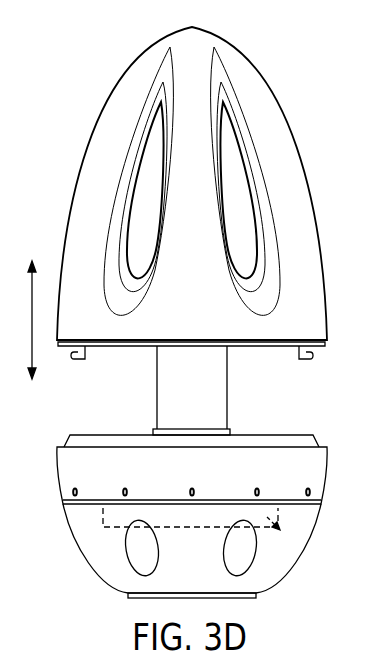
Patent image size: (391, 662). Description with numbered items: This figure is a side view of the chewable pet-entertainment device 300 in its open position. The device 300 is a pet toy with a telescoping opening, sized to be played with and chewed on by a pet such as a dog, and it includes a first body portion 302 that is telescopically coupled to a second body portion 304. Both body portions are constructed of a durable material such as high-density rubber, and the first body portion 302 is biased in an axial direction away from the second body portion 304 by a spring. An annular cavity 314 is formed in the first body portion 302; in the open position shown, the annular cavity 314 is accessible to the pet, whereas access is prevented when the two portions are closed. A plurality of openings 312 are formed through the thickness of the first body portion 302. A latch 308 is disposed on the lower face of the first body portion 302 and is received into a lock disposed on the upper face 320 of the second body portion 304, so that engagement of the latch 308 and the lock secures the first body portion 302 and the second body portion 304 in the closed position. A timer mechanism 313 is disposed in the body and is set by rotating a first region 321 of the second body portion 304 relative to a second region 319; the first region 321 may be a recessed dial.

The chewable pet-entertainment device 300 is at (316, 99).
The first body portion 302 is at (289, 181).
The openings 312 is at (132, 224).
The annular cavity 314 is at (262, 247).
The latch 308 is at (81, 359).
The upper face 320 is at (270, 432).
The second region 319 is at (318, 456).
The second body portion 304 is at (65, 502).
The first region 321 is at (298, 541).
The timer mechanism 313 is at (283, 531).